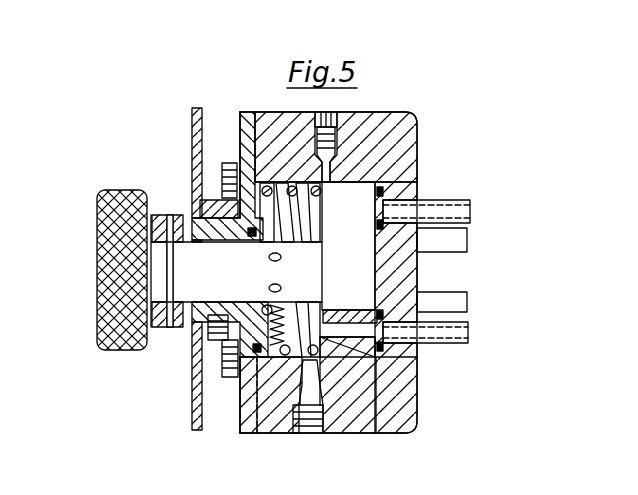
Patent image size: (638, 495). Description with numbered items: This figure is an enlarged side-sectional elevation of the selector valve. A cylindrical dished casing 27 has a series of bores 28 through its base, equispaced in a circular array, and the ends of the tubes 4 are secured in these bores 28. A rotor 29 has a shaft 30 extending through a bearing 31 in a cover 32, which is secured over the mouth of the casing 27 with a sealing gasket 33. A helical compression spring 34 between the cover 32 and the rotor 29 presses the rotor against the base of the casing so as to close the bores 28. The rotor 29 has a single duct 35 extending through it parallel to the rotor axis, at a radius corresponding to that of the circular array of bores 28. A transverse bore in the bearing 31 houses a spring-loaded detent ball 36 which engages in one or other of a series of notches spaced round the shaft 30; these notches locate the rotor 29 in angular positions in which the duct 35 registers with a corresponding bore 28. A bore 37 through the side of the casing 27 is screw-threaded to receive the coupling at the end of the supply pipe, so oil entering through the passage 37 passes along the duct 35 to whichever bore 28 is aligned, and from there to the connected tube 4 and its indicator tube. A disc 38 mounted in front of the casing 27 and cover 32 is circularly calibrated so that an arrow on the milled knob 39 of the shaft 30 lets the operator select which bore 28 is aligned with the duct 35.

The tubes 4 is at (462, 250).
The cylindrical dished casing 27 is at (383, 132).
The bores 28 is at (382, 198).
The rotor 29 is at (372, 278).
The shaft 30 is at (200, 290).
The bearing 31 is at (193, 204).
The cover 32 is at (243, 101).
The sealing gasket 33 is at (242, 431).
The helical compression spring 34 is at (290, 232).
The duct 35 is at (344, 313).
The spring-loaded detent ball 36 is at (222, 364).
The bore 37 is at (268, 259).
The disc 38 is at (190, 122).
The milled knob 39 is at (125, 190).